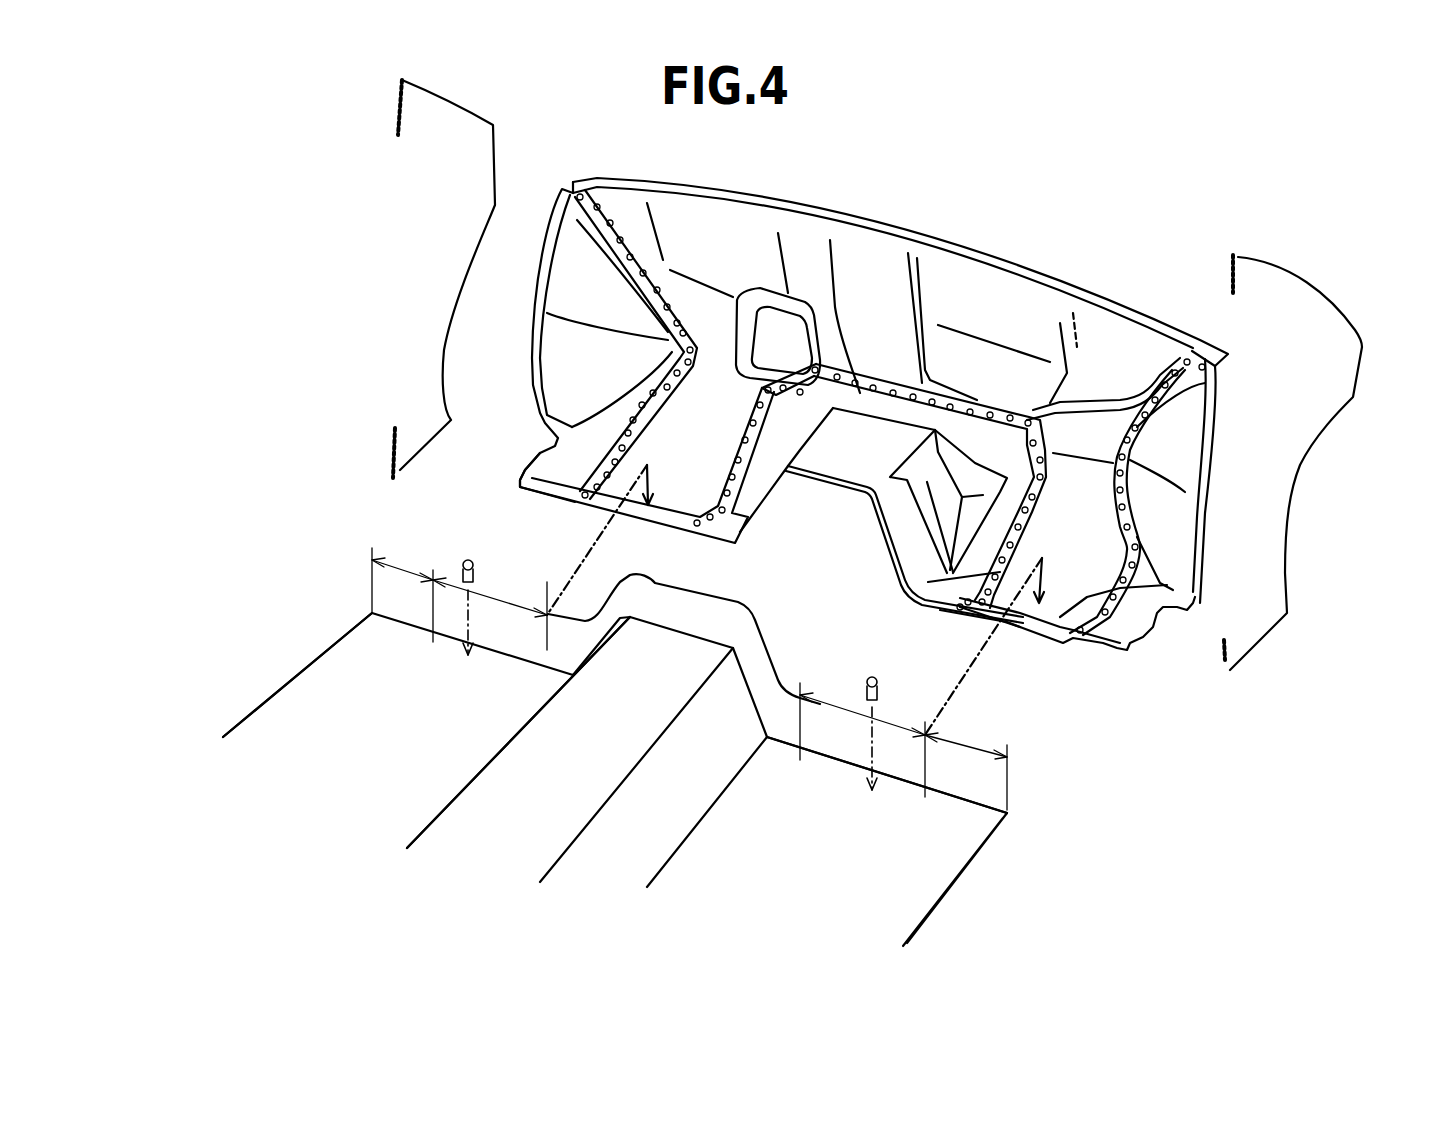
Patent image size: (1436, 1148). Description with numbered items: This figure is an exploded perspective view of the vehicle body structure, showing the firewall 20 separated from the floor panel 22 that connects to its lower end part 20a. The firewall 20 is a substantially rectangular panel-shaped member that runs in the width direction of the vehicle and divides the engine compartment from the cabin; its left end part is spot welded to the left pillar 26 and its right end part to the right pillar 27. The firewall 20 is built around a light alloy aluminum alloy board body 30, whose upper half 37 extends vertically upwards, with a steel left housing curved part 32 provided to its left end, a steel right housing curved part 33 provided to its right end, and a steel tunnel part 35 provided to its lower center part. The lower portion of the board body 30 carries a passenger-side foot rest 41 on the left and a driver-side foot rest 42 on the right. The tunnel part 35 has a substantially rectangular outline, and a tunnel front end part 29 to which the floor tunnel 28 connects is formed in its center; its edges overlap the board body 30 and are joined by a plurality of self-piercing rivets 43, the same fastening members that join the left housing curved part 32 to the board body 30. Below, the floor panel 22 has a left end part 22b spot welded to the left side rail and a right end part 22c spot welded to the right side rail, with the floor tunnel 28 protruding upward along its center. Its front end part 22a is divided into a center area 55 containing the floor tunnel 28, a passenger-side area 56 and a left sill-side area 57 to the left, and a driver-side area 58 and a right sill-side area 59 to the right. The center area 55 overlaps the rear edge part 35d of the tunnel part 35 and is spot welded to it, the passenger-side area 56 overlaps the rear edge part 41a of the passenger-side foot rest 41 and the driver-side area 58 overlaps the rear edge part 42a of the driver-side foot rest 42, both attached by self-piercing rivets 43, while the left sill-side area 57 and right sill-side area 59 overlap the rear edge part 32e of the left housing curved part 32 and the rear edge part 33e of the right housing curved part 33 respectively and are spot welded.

The firewall 20 is at (846, 195).
The lower end part 20a is at (1167, 585).
The floor panel 22 is at (243, 705).
The front end part 22a is at (950, 803).
The left end part 22b is at (312, 663).
The right end part 22c is at (940, 887).
The left pillar 26 is at (482, 157).
The right pillar 27 is at (1310, 298).
The floor tunnel 28 is at (473, 783).
The tunnel front end part 29 is at (858, 423).
The board body 30 is at (900, 228).
The left housing curved part 32 is at (543, 273).
The rear edge part 32e is at (547, 480).
The right housing curved part 33 is at (1200, 421).
The rear edge part 33e is at (1107, 635).
The tunnel part 35 is at (1003, 437).
The rear edge part 35d is at (840, 473).
The upper half 37 is at (970, 295).
The passenger-side foot rest 41 is at (665, 405).
The rear edge part 41a is at (630, 503).
The driver-side foot rest 42 is at (1093, 528).
The rear edge part 42a is at (1023, 613).
The self-piercing rivets 43 is at (475, 570).
The center area 55 is at (702, 592).
The passenger-side area 56 is at (503, 593).
The left sill-side area 57 is at (402, 570).
The driver-side area 58 is at (835, 707).
The right sill-side area 59 is at (963, 747).